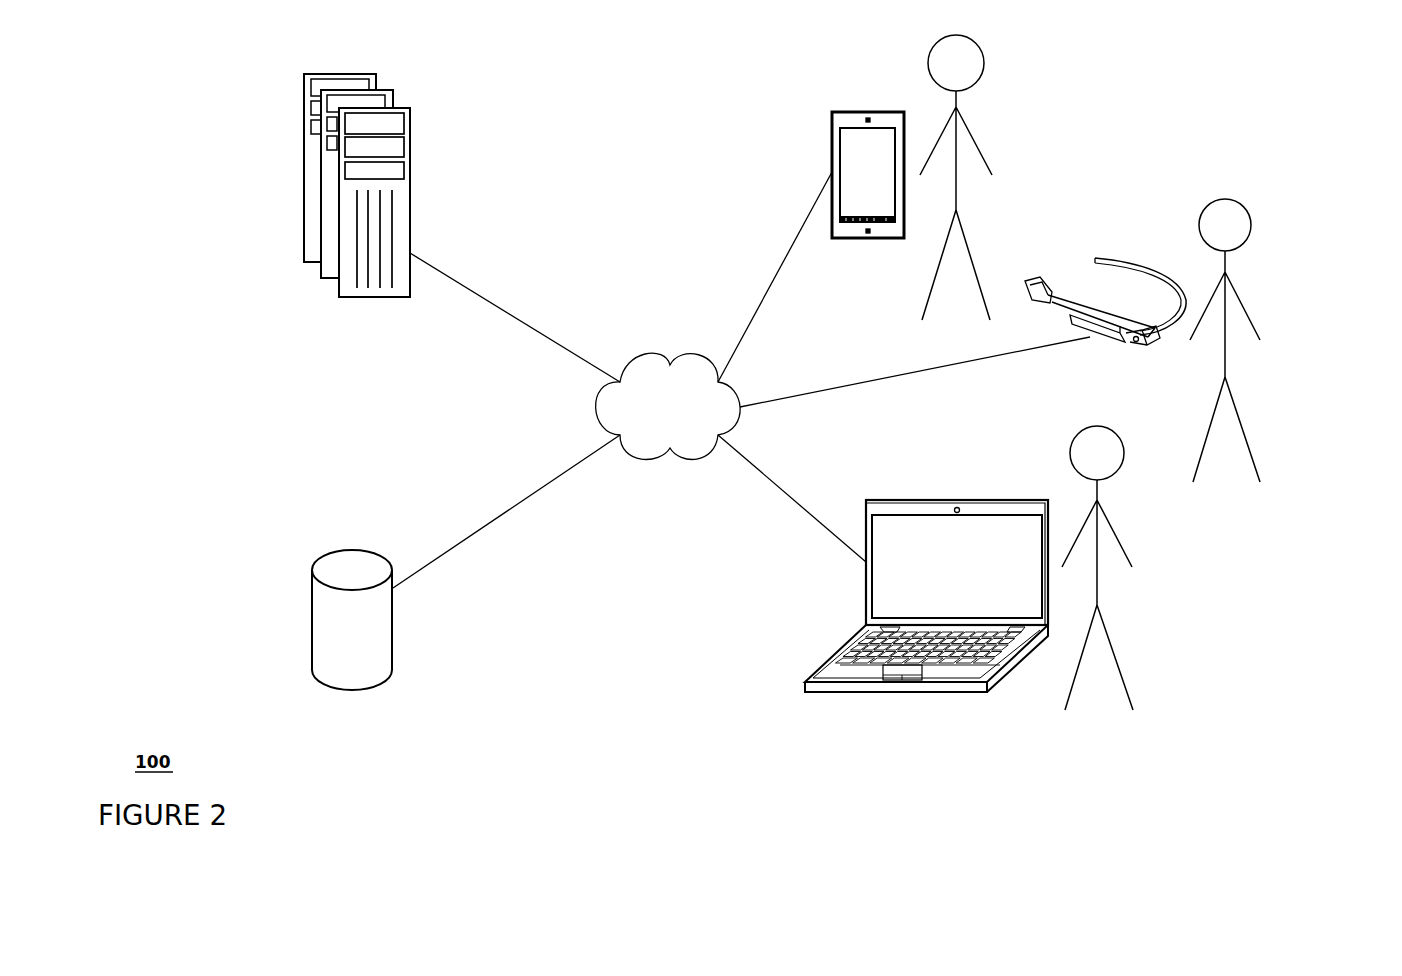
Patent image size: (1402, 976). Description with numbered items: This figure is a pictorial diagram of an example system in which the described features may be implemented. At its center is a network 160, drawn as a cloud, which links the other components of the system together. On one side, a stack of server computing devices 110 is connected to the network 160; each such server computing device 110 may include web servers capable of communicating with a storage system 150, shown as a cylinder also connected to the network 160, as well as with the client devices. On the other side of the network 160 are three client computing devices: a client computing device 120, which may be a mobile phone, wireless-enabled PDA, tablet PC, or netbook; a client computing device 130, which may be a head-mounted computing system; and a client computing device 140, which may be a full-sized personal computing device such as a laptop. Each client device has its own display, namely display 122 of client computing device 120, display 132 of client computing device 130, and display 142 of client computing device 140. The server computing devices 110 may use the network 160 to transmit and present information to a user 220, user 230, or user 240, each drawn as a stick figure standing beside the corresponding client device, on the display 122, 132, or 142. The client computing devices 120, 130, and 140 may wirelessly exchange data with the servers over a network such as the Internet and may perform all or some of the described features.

The server computing device 110 is at (410, 150).
The client computing device 120 is at (832, 145).
The display 122 is at (837, 172).
The client computing device 130 is at (1125, 263).
The display 132 is at (1147, 347).
The client computing device 140 is at (865, 573).
The display 142 is at (872, 607).
The storage system 150 is at (395, 640).
The network 160 is at (668, 406).
The user 220 is at (987, 163).
The user 230 is at (1258, 330).
The user 240 is at (1130, 560).